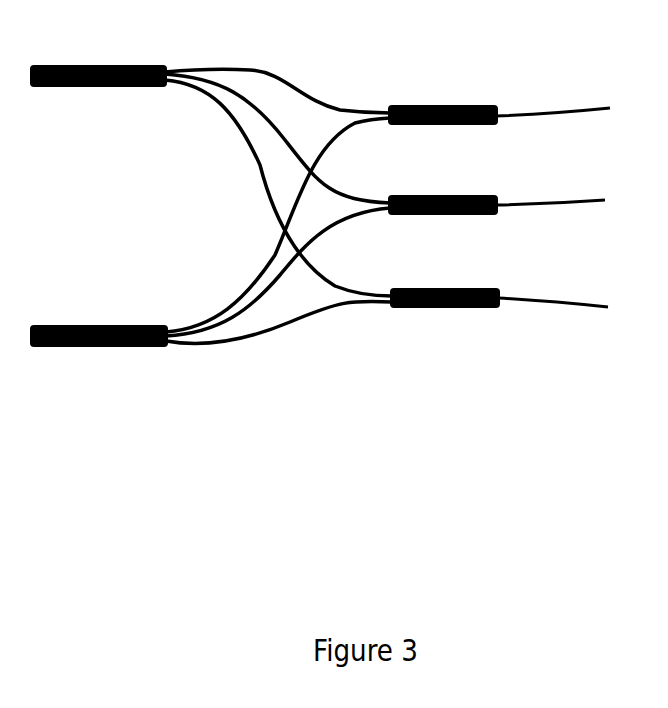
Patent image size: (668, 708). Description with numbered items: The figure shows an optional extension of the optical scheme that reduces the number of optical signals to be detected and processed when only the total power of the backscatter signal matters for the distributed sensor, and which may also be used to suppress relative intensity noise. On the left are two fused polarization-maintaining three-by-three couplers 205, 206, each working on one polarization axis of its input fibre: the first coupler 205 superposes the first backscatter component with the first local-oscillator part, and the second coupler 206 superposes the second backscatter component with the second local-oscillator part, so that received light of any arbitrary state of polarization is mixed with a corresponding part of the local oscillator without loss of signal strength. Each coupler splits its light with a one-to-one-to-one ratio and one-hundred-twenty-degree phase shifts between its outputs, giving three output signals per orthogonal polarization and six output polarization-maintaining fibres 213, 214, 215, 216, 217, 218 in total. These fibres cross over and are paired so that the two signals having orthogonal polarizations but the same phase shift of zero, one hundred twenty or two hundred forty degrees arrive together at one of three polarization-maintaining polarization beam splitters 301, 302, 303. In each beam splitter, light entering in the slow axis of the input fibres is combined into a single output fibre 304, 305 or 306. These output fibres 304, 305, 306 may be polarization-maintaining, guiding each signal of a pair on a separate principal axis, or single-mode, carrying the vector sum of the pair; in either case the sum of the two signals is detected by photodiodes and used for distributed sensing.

The fused polarization-maintaining 3×3 coupler 205 is at (102, 95).
The fused polarization-maintaining 3×3 coupler 206 is at (103, 320).
The output PMF 213 is at (315, 92).
The output PMF 214 is at (228, 78).
The output PMF 215 is at (202, 98).
The output PMF 216 is at (208, 322).
The output PMF 217 is at (232, 332).
The output PMF 218 is at (307, 322).
The PM polarization beam splitter 301 is at (438, 102).
The PM polarization beam splitter 302 is at (445, 192).
The PM polarization beam splitter 303 is at (448, 310).
The output fibre 304 is at (590, 102).
The output fibre 305 is at (592, 208).
The output fibre 306 is at (592, 312).